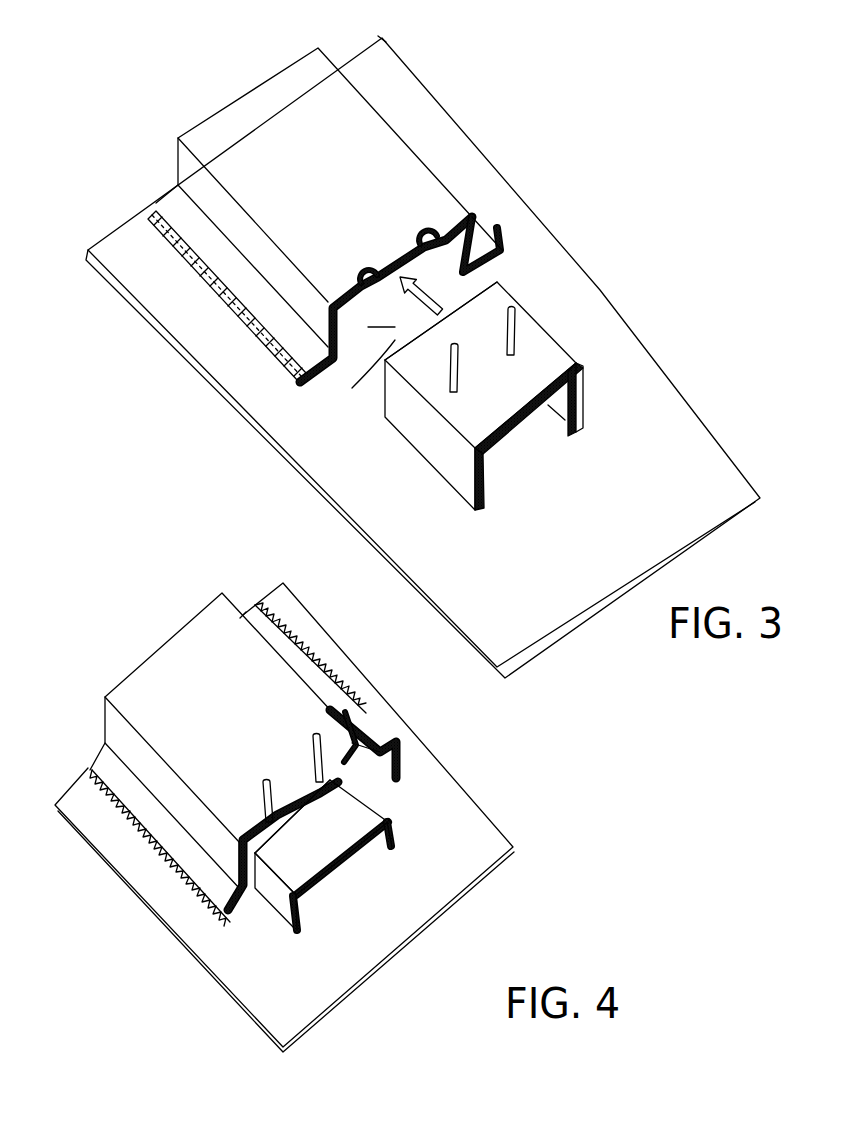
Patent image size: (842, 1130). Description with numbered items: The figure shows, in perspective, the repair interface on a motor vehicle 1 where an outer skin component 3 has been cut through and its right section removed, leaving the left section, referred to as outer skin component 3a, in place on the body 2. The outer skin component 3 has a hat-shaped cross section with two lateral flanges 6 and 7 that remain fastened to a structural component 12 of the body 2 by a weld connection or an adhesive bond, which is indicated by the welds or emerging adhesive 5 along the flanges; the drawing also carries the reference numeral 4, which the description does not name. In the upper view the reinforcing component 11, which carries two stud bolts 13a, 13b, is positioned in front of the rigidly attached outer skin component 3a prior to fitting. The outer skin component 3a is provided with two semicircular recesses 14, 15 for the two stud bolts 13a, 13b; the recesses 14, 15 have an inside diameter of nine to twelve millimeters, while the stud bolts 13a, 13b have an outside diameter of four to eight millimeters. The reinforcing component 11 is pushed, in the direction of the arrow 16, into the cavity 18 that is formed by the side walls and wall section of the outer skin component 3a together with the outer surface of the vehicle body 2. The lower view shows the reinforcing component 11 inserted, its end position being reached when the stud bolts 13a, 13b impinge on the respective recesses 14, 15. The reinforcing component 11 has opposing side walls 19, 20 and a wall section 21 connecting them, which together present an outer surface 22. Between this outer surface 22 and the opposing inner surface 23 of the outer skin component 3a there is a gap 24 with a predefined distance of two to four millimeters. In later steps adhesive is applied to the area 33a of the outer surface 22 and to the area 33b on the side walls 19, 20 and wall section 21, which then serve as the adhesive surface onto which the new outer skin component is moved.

In FIG. 3, the motor vehicle 1 is at (423, 350).
In FIG. 4, the motor vehicle 1 is at (284, 801).
In FIG. 3, the body 2 is at (423, 350).
In FIG. 4, the body 2 is at (284, 801).
In FIG. 3, the structural component 12 is at (488, 168).
In FIG. 4, the structural component 12 is at (312, 623).
In FIG. 3, the outer skin component 3 is at (325, 178).
In FIG. 4, the outer skin component 3 is at (219, 730).
In FIG. 3, the left section of the outer skin component 3a is at (250, 136).
In FIG. 4, the left section of the outer skin component 3a is at (175, 648).
In FIG. 3, the spring strip 4 is at (321, 319).
In FIG. 4, the spring strip 4 is at (256, 895).
In FIG. 3, the welds or emerging adhesive 5 is at (232, 308).
In FIG. 4, the welds or emerging adhesive 5 is at (228, 764).
In FIG. 3, the lateral flange 6 is at (170, 202).
In FIG. 4, the lateral flange 6 is at (107, 765).
In FIG. 3, the lateral flange 7 is at (500, 246).
In FIG. 4, the lateral flange 7 is at (367, 748).
In FIG. 3, the reinforcing component 11 is at (495, 343).
In FIG. 4, the reinforcing component 11 is at (389, 874).
In FIG. 4, the stud bolt 13a is at (263, 782).
In FIG. 3, the stud bolt 13b is at (514, 310).
In FIG. 4, the stud bolt 13b is at (327, 737).
In FIG. 3, the semicircular recess 14 is at (358, 273).
In FIG. 3, the semicircular recess 15 is at (415, 234).
In FIG. 3, the arrow 16 is at (423, 305).
In FIG. 3, the cavity 18 is at (385, 313).
In FIG. 4, the side wall 19 is at (282, 905).
In FIG. 4, the side wall 20 is at (392, 808).
In FIG. 4, the wall section 21 is at (330, 822).
In FIG. 4, the outer surface 22 is at (389, 874).
In FIG. 3, the inner surface 23 is at (430, 288).
In FIG. 4, the gap 24 is at (255, 903).
In FIG. 3, the area of the outer surface 33a is at (482, 307).
In FIG. 4, the area of the outer surface 33b is at (350, 802).